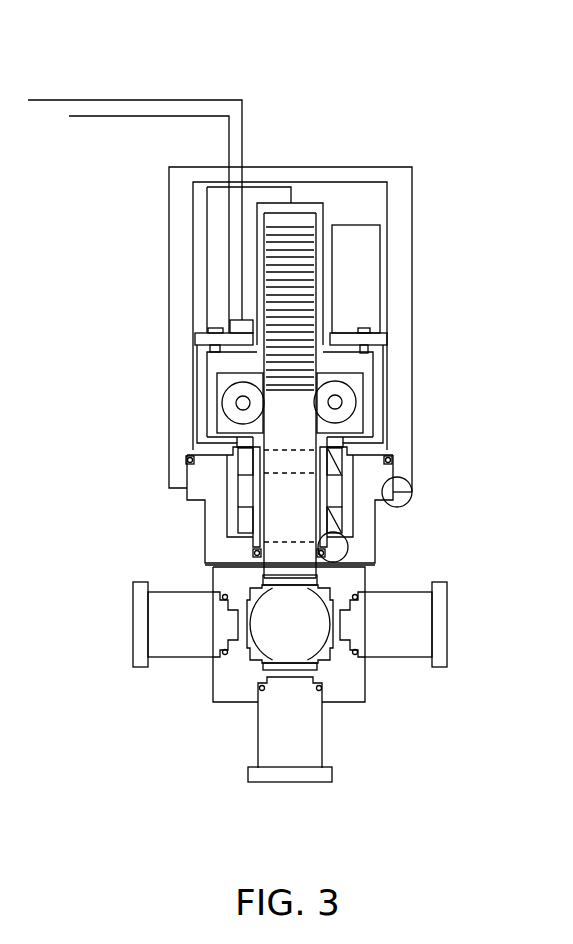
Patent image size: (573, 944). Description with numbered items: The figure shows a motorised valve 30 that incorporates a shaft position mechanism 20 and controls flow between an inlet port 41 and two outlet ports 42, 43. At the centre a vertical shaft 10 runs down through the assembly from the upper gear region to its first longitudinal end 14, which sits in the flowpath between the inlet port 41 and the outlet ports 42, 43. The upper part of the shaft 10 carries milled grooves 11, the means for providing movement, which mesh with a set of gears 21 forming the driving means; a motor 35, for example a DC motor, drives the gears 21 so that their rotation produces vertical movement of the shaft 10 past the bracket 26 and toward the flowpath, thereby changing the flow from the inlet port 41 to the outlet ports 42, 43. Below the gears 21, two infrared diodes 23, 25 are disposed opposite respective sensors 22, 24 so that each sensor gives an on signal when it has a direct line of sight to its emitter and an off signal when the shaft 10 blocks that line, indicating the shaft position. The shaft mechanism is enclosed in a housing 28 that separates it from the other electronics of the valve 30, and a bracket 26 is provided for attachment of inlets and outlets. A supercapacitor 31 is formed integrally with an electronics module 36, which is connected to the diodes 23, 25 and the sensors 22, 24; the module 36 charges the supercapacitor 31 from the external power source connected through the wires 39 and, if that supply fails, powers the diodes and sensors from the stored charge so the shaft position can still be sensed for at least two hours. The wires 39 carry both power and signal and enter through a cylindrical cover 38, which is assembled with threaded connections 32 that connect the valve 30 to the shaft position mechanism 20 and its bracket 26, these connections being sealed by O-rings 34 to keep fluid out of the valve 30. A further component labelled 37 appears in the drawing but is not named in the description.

The shaft 10 is at (308, 227).
The milled grooves 11 is at (300, 325).
The first longitudinal end 14 is at (285, 597).
The shaft position mechanism 20 is at (299, 196).
The set of gears 21 is at (357, 397).
The sensor 22 is at (248, 473).
The infrared diode 23 is at (362, 458).
The sensor 24 is at (248, 520).
The infrared diode 25 is at (343, 518).
The bracket 26 is at (355, 575).
The housing 28 is at (325, 205).
The valve 30 is at (272, 152).
The supercapacitor 31 is at (362, 270).
The threaded connections 32 is at (403, 492).
The O-rings 34 is at (191, 458).
The motor 35 is at (197, 403).
The electronics module 36 is at (207, 337).
The guide rod 37 is at (218, 283).
The cylindrical cover 38 is at (182, 200).
The wires 39 is at (162, 110).
The inlet port 41 is at (188, 605).
The outlet port 42 is at (275, 743).
The outlet port 43 is at (389, 640).